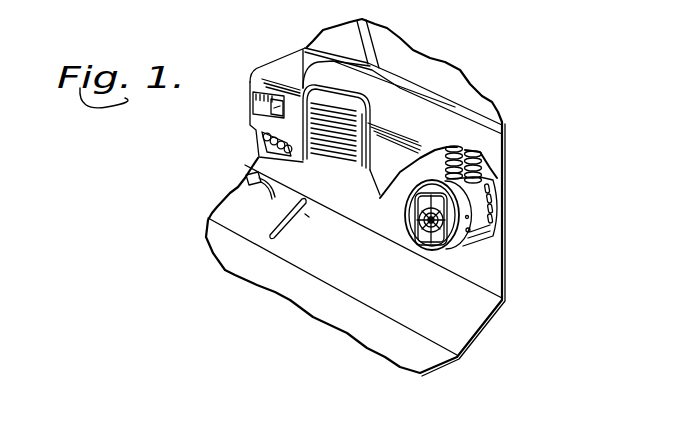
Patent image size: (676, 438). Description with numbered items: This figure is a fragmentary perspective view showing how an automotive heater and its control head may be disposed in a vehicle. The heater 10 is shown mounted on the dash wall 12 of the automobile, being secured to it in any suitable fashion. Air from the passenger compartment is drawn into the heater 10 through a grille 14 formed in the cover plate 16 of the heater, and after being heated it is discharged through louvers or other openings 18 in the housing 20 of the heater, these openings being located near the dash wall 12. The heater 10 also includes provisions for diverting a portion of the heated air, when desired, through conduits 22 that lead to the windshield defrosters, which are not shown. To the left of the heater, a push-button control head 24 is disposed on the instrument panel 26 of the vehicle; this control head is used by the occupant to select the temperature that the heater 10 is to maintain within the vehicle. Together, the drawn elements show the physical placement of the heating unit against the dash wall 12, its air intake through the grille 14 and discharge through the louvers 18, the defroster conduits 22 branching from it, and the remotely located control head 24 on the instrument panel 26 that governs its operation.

The heater 10 is at (475, 247).
The dash wall 12 is at (505, 253).
The grille 14 is at (429, 246).
The cover plate 16 is at (405, 240).
The louvers 18 is at (497, 204).
The housing 20 is at (472, 222).
The conduits 22 is at (482, 158).
The push-button control head 24 is at (264, 148).
The instrument panel 26 is at (248, 113).